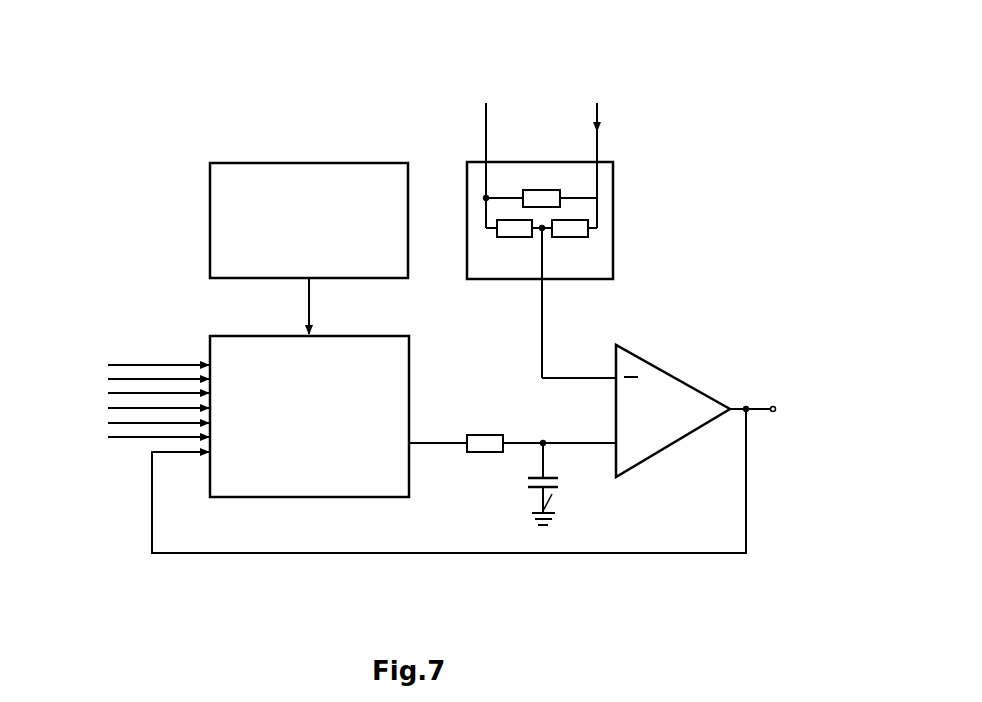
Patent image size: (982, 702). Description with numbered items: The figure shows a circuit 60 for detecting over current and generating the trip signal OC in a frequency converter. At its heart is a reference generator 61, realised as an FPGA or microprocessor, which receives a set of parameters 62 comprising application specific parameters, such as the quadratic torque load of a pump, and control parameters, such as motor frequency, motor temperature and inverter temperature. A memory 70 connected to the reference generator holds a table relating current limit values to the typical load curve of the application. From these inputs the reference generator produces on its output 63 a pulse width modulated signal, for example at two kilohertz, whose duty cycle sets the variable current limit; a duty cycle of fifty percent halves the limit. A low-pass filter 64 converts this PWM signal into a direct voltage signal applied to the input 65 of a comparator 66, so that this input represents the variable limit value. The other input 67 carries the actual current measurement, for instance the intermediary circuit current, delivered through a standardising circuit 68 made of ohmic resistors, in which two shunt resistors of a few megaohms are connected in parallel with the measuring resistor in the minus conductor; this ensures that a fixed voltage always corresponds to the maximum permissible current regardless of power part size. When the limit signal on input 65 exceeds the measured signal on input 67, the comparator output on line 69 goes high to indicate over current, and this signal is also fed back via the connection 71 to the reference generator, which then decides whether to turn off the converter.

The circuit 60 is at (333, 90).
The reference generator 61 is at (401, 336).
The parameters 62 is at (87, 300).
The output 63 is at (430, 443).
The low-pass filter 64 is at (501, 473).
The input 65 is at (592, 447).
The comparator 66 is at (675, 444).
The input 67 is at (578, 377).
The standardising circuit 68 is at (614, 224).
The output 69 is at (771, 406).
The memory 70 is at (396, 163).
The connection 71 is at (648, 555).